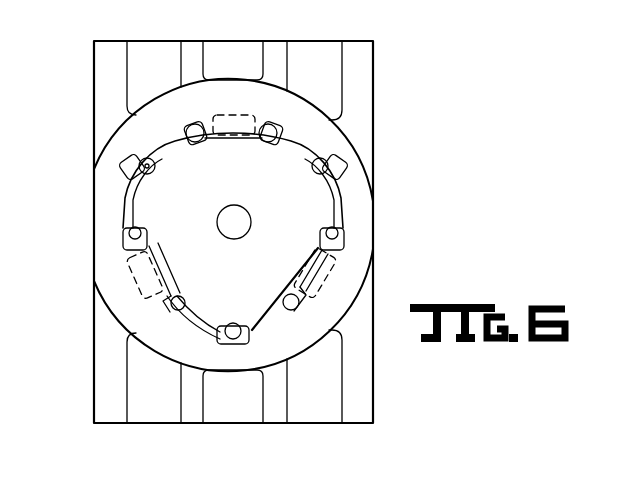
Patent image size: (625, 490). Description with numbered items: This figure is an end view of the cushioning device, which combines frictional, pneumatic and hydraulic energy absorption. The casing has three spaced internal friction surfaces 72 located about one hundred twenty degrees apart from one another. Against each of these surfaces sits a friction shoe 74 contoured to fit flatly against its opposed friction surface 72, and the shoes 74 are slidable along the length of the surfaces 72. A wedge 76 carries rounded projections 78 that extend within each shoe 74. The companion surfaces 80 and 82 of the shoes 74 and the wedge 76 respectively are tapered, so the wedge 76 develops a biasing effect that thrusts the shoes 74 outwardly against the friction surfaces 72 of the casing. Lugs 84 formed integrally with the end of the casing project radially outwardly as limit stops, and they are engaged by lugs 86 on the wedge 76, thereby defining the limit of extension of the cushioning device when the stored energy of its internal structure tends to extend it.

The internal friction surfaces 72 is at (140, 161).
The friction shoes 74 is at (131, 224).
The wedge 76 is at (232, 184).
The rounded projections 78 is at (148, 194).
The companion surface of the shoe 80 is at (168, 157).
The companion surface of the wedge 82 is at (125, 203).
The lugs 84 is at (250, 122).
The lugs on the wedge 86 is at (235, 112).